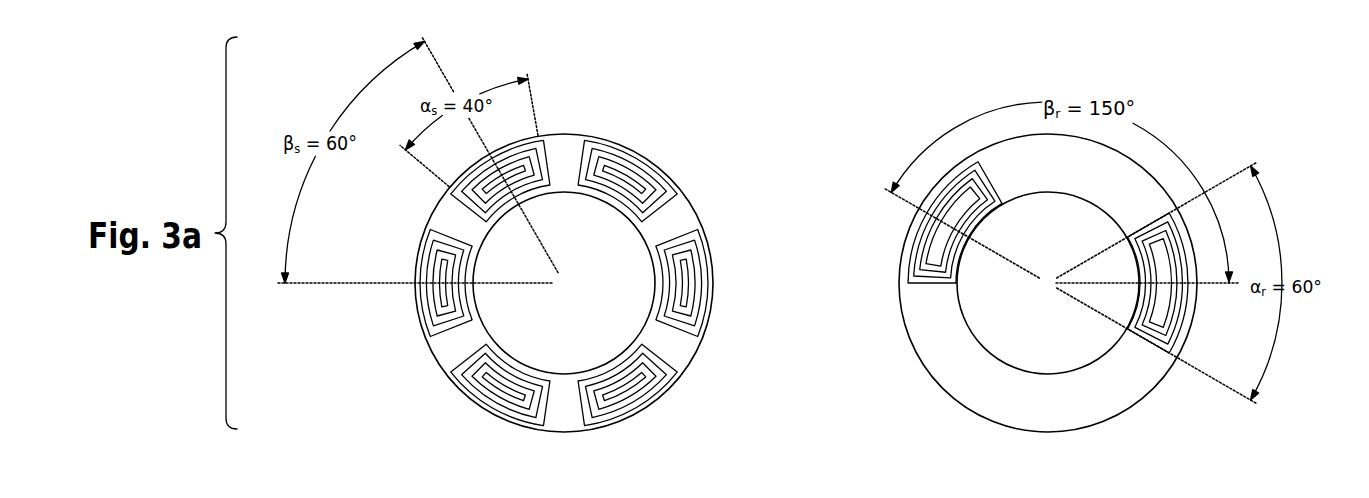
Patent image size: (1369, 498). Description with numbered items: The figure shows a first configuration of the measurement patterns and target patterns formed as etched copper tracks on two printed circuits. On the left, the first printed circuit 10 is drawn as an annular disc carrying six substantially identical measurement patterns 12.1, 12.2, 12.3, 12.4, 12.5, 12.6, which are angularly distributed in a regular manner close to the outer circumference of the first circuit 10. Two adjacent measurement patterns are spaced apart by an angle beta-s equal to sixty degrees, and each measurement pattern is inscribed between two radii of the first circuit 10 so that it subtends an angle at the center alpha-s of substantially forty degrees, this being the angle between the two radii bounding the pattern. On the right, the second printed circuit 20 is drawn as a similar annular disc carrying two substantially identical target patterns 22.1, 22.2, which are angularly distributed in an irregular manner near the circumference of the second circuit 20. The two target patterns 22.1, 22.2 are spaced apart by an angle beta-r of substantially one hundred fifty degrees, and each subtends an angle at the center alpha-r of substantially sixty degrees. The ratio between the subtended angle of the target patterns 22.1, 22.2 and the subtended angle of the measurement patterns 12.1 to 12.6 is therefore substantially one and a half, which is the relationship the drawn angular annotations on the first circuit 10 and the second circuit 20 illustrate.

The first printed circuit 10 is at (608, 104).
The measurement pattern 12.1 is at (700, 292).
The measurement pattern 12.2 is at (638, 164).
The measurement pattern 12.3 is at (532, 188).
The measurement pattern 12.4 is at (425, 270).
The measurement pattern 12.5 is at (487, 403).
The measurement pattern 12.6 is at (630, 410).
The second printed circuit 20 is at (1177, 104).
The target pattern 22.1 is at (1183, 320).
The target pattern 22.2 is at (926, 213).